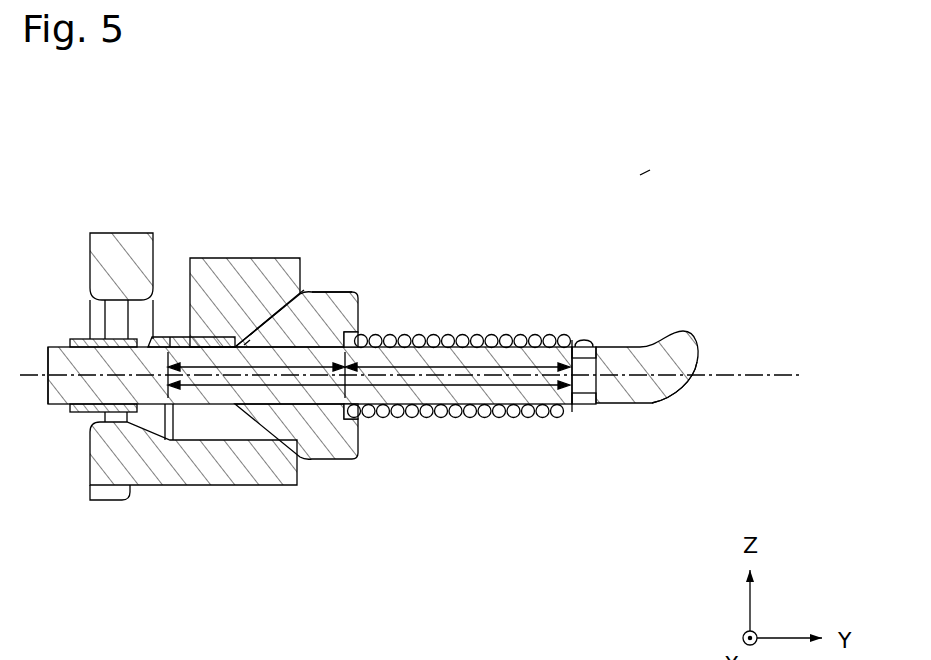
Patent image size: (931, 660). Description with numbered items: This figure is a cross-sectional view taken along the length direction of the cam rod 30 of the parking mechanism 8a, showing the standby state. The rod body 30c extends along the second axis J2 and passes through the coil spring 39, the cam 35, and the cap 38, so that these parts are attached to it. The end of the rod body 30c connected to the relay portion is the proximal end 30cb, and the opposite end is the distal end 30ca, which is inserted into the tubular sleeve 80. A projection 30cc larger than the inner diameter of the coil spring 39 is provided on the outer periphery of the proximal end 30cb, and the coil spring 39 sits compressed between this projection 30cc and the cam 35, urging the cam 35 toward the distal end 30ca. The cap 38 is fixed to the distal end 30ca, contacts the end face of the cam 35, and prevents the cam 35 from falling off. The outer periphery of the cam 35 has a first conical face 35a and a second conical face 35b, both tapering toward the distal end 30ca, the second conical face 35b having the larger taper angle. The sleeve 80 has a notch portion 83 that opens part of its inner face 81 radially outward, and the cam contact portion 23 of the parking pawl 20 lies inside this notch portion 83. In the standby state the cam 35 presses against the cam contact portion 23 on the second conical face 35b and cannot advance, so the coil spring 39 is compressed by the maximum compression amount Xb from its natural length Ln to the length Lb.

The adjustment mechanism 8a is at (655, 164).
The parking pawl 20 is at (228, 252).
The cam contact portion 23 is at (304, 292).
The cam rod 30 is at (636, 341).
The rod body 30c is at (496, 348).
The distal end 30ca is at (60, 386).
The proximal end 30cb is at (650, 388).
The projection 30cc is at (585, 346).
The cam 35 is at (361, 320).
The first conical face 35a is at (340, 291).
The second conical face 35b is at (277, 322).
The cap 38 is at (82, 336).
The coil spring 39 is at (497, 418).
The sleeve 80 is at (191, 492).
The inner face 81 is at (271, 442).
The notch portion 83 is at (156, 336).
The length Lb is at (457, 366).
The natural length Ln is at (370, 387).
The maximum compression amount Xb is at (247, 343).
The second axis J2 is at (746, 375).